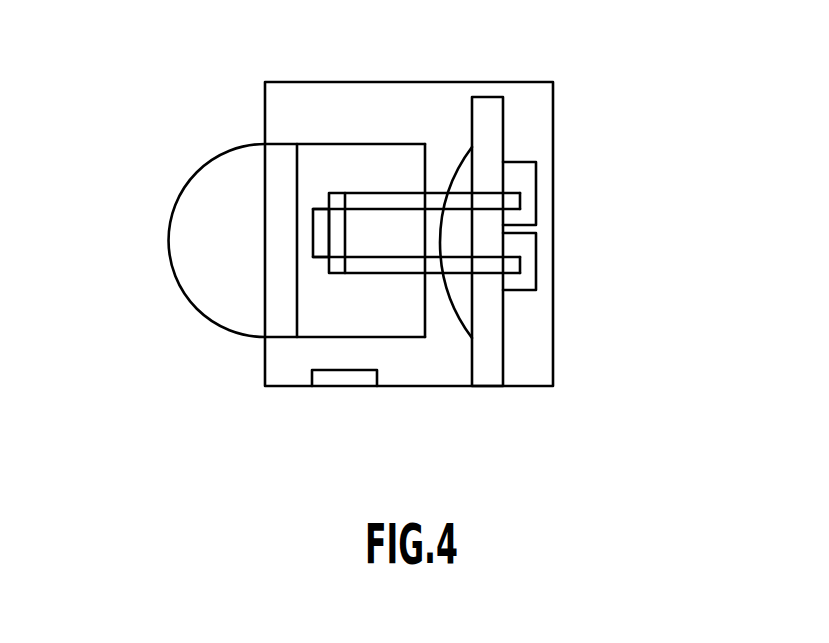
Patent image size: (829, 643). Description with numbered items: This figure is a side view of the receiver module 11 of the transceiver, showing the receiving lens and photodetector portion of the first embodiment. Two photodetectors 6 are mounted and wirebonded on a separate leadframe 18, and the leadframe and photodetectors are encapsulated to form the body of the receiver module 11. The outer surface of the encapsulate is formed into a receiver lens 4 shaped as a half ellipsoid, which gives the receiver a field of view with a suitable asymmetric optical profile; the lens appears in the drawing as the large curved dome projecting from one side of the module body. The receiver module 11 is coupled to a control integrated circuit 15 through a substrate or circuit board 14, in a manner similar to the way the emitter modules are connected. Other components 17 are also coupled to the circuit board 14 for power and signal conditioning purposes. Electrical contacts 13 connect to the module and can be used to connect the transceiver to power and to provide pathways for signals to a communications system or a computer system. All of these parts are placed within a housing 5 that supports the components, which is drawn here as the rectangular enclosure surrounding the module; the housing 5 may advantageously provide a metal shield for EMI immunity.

The receiver lens 4 is at (173, 226).
The housing 5 is at (579, 402).
The photodetectors 6 is at (313, 245).
The receiver module 11 is at (407, 328).
The electrical contacts 13 is at (342, 378).
The circuit board 14 is at (493, 122).
The control integrated circuit 15 is at (458, 243).
The other components 17 is at (527, 179).
The leadframe 18 is at (383, 198).